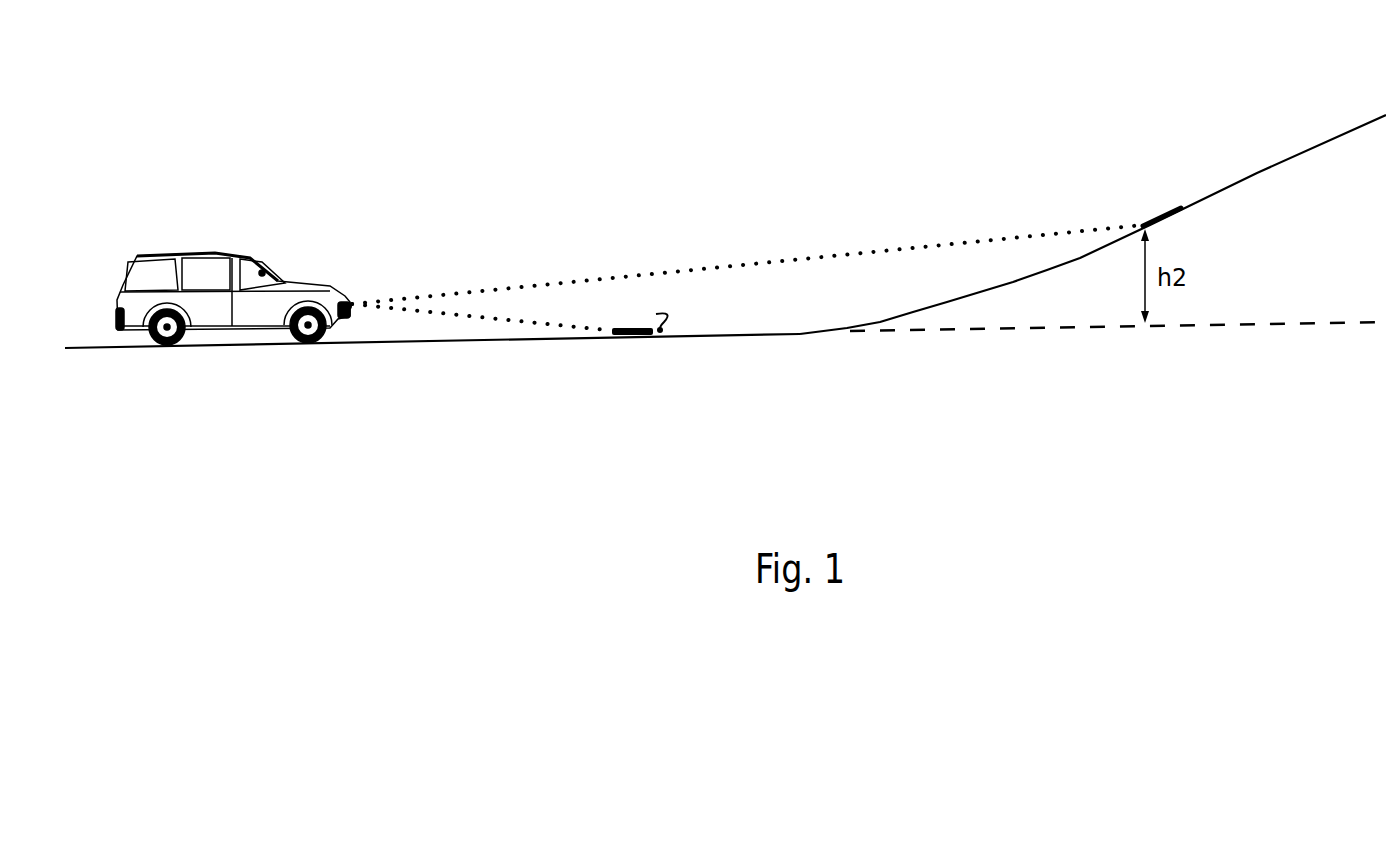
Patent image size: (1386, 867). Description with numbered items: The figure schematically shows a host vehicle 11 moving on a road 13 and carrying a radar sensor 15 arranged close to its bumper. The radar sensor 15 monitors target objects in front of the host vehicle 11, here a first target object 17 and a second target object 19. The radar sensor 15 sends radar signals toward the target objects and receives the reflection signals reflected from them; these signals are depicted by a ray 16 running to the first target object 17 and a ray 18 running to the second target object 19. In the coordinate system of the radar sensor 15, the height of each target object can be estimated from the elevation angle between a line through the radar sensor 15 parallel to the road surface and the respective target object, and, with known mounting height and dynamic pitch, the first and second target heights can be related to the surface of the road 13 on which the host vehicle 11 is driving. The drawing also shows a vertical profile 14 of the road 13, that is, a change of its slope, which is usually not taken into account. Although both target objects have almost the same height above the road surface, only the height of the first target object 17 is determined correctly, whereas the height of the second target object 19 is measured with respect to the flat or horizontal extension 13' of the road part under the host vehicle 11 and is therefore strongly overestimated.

The host vehicle 11 is at (238, 266).
The road 13 is at (432, 385).
The flat or horizontal extension of the road 13' is at (1118, 281).
The vertical profile of the road 14 is at (1255, 175).
The radar sensor 15 is at (346, 304).
The ray 16 is at (435, 316).
The first target object 17 is at (633, 336).
The ray 18 is at (782, 261).
The second target object 19 is at (1168, 206).